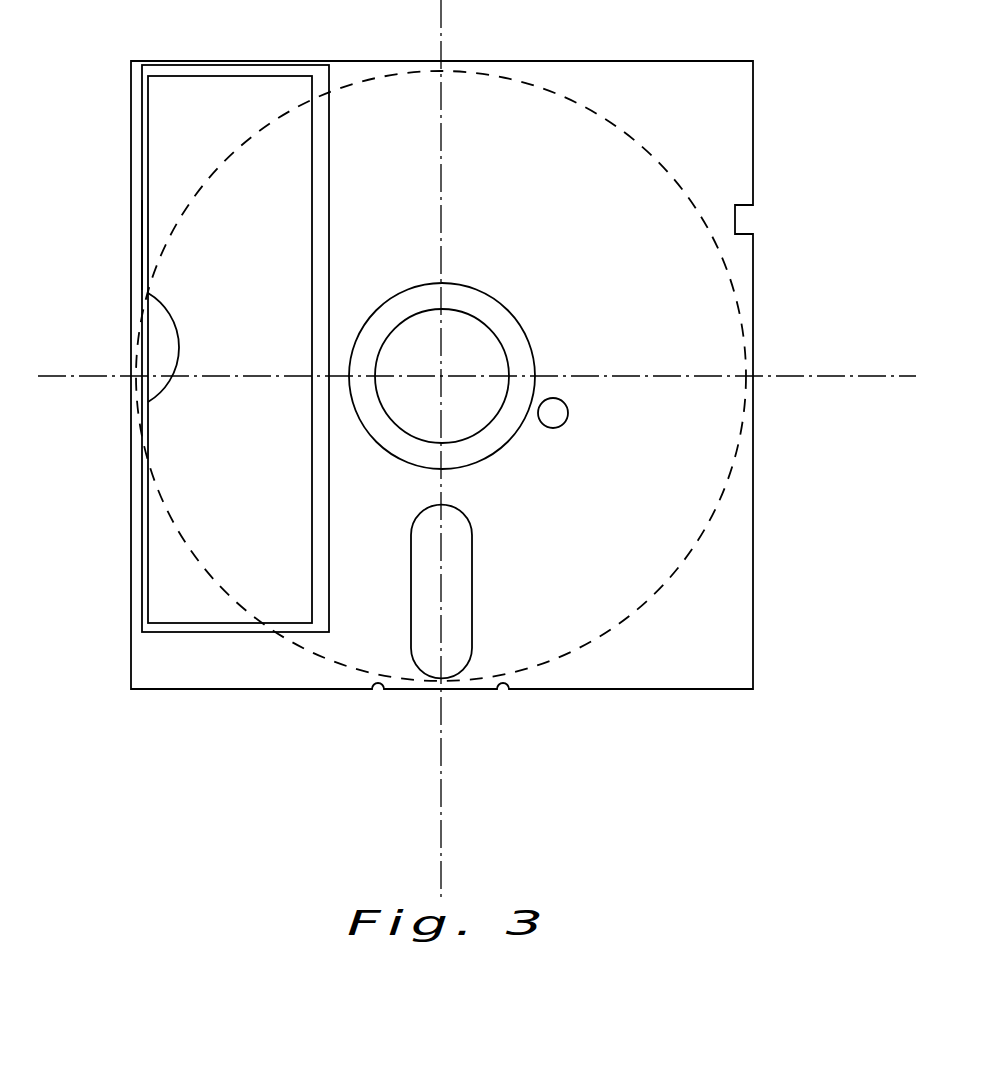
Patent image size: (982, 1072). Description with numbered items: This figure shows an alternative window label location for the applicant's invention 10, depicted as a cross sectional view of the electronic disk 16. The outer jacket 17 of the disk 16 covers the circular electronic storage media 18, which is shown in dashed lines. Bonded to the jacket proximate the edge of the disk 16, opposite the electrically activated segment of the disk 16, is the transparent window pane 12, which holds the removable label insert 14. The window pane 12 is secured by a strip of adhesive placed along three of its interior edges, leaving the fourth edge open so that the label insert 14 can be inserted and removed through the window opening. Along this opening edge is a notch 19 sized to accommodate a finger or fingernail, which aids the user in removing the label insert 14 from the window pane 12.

The invention 10 is at (330, 158).
The transparent window pane 12 is at (142, 243).
The removable label insert 14 is at (178, 172).
The electronic disk 16 is at (676, 597).
The outer jacket 17 is at (698, 113).
The circular electronic storage media 18 is at (715, 506).
The notch 19 is at (177, 330).